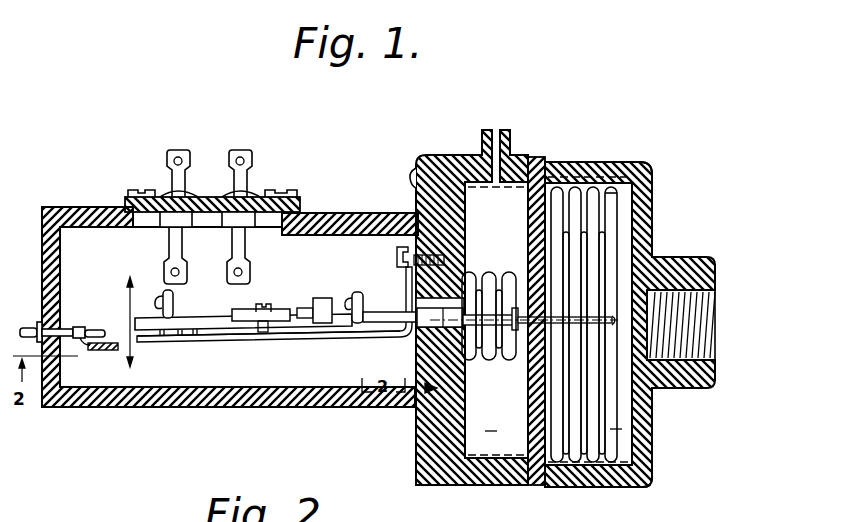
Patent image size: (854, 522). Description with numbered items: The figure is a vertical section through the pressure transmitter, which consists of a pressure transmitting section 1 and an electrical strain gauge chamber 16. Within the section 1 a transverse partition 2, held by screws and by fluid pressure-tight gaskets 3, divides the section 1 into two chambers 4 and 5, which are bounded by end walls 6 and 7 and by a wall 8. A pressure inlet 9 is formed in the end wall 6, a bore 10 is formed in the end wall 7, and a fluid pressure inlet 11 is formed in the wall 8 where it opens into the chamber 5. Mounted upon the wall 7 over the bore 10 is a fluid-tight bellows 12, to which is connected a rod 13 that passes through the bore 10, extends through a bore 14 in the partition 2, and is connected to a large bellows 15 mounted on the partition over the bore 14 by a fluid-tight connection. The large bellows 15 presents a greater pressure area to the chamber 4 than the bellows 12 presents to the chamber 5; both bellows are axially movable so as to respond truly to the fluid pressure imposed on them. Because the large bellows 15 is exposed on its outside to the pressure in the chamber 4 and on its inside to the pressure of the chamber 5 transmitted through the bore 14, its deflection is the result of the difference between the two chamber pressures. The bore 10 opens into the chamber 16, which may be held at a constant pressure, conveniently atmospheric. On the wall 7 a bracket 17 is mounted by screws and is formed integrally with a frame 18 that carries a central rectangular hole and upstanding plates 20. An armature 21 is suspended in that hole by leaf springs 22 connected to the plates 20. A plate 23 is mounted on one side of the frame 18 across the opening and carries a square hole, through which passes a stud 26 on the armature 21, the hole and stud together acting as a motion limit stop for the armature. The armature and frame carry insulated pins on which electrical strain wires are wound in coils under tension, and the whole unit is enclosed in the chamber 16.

The pressure transmitting section 1 is at (457, 148).
The transverse partition 2 is at (546, 163).
The gaskets 3 is at (542, 156).
The chamber 4 is at (589, 319).
The chamber 5 is at (496, 321).
The end wall 6 is at (652, 227).
The end wall 7 is at (408, 434).
The wall 8 is at (612, 162).
The pressure inlet 9 is at (716, 270).
The bore 10 is at (416, 356).
The fluid pressure inlet 11 is at (497, 128).
The bellows 12 is at (507, 272).
The rod 13 is at (462, 268).
The bore 14 is at (525, 332).
The large bellows 15 is at (598, 197).
The electrical strain gauge chamber 16 is at (371, 203).
The bracket 17 is at (405, 272).
The frame 18 is at (330, 340).
The upstanding plates 20 is at (380, 297).
The armature 21 is at (233, 333).
The leaf springs 22 is at (175, 300).
The plate 23 is at (282, 312).
The stud 26 is at (258, 308).